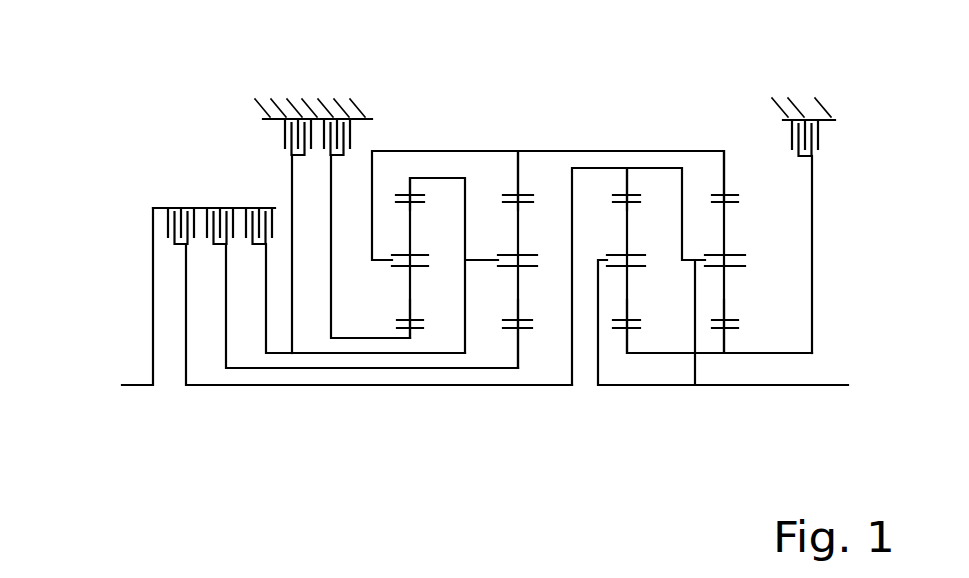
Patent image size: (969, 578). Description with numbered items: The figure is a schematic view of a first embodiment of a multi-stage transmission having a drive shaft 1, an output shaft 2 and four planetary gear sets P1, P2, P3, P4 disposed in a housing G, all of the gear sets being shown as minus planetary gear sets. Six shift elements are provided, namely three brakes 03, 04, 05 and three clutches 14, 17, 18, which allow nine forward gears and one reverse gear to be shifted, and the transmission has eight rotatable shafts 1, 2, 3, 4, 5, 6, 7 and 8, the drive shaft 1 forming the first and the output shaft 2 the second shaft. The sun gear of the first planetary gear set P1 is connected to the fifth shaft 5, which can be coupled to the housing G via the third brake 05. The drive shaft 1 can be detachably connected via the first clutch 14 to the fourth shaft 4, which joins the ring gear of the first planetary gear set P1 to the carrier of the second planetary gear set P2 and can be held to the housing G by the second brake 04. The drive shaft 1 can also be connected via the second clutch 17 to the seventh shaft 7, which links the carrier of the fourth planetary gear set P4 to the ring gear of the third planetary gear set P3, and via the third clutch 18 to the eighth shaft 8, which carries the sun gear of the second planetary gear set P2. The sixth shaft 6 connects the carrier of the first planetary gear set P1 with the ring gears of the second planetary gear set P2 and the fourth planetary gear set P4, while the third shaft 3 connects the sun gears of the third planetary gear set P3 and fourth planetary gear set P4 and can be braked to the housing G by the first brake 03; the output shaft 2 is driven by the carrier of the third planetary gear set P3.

The drive shaft 1 is at (135, 387).
The output shaft 2 is at (598, 388).
The third shaft 3 is at (628, 338).
The fourth shaft 4 is at (410, 178).
The fifth shaft 5 is at (405, 332).
The sixth shaft 6 is at (378, 257).
The seventh shaft 7 is at (627, 192).
The eighth shaft 8 is at (525, 333).
The first clutch 14 is at (250, 220).
The second clutch 17 is at (158, 225).
The third clutch 18 is at (203, 212).
The first brake 03 is at (795, 148).
The second brake 04 is at (283, 135).
The third brake 05 is at (357, 135).
The housing G is at (300, 100).
The first planetary gear set P1 is at (414, 406).
The second planetary gear set P2 is at (522, 406).
The third planetary gear set P3 is at (631, 406).
The fourth planetary gear set P4 is at (727, 406).